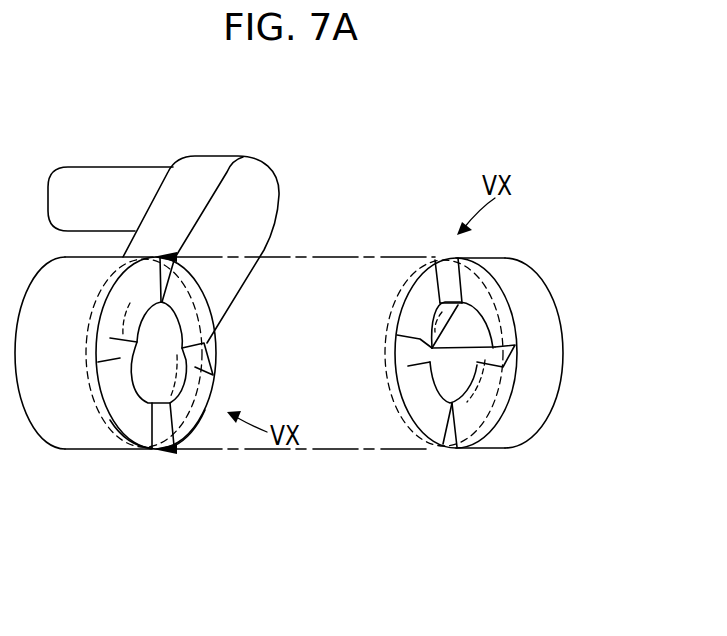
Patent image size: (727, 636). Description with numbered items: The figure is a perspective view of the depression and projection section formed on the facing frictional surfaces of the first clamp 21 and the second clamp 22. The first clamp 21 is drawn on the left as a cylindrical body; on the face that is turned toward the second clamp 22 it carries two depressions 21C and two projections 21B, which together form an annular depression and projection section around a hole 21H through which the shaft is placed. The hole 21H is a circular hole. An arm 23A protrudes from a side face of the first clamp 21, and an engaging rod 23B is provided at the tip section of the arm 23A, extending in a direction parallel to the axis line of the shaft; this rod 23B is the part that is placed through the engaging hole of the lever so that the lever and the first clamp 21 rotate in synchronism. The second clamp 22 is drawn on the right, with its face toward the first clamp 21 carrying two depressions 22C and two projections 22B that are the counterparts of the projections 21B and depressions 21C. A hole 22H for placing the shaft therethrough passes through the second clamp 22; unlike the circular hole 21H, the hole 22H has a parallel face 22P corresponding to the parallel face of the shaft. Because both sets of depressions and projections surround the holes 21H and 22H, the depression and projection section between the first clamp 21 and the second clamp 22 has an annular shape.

The first clamp 21 is at (70, 425).
The hole 21H is at (162, 328).
The projections 21B is at (195, 442).
The depressions 21C is at (130, 417).
The second clamp 22 is at (523, 435).
The hole 22H is at (452, 378).
The parallel face 22P is at (463, 322).
The depressions 22C is at (498, 323).
The projections 22B is at (492, 383).
The arm 23A is at (212, 163).
The engaging rod 23B is at (110, 182).